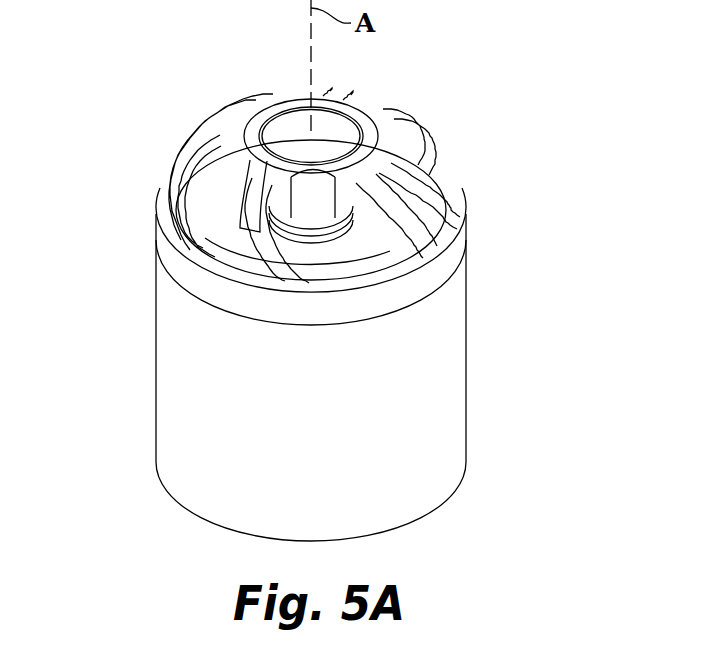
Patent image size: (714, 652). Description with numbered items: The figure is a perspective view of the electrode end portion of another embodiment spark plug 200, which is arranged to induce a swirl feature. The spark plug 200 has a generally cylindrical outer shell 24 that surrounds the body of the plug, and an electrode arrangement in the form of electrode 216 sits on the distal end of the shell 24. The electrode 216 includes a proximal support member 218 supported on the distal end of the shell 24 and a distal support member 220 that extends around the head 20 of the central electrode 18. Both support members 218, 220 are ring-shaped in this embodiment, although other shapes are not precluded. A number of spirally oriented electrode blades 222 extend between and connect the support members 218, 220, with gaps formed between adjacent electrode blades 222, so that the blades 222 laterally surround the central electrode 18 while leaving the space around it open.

The spark plug 200 is at (478, 150).
The electrode 216 is at (190, 144).
The proximal support member 218 is at (166, 235).
The distal support member 220 is at (295, 110).
The electrode blades 222 is at (215, 179).
The head 20 is at (328, 133).
The central electrode 18 is at (323, 228).
The outer shell 24 is at (452, 310).